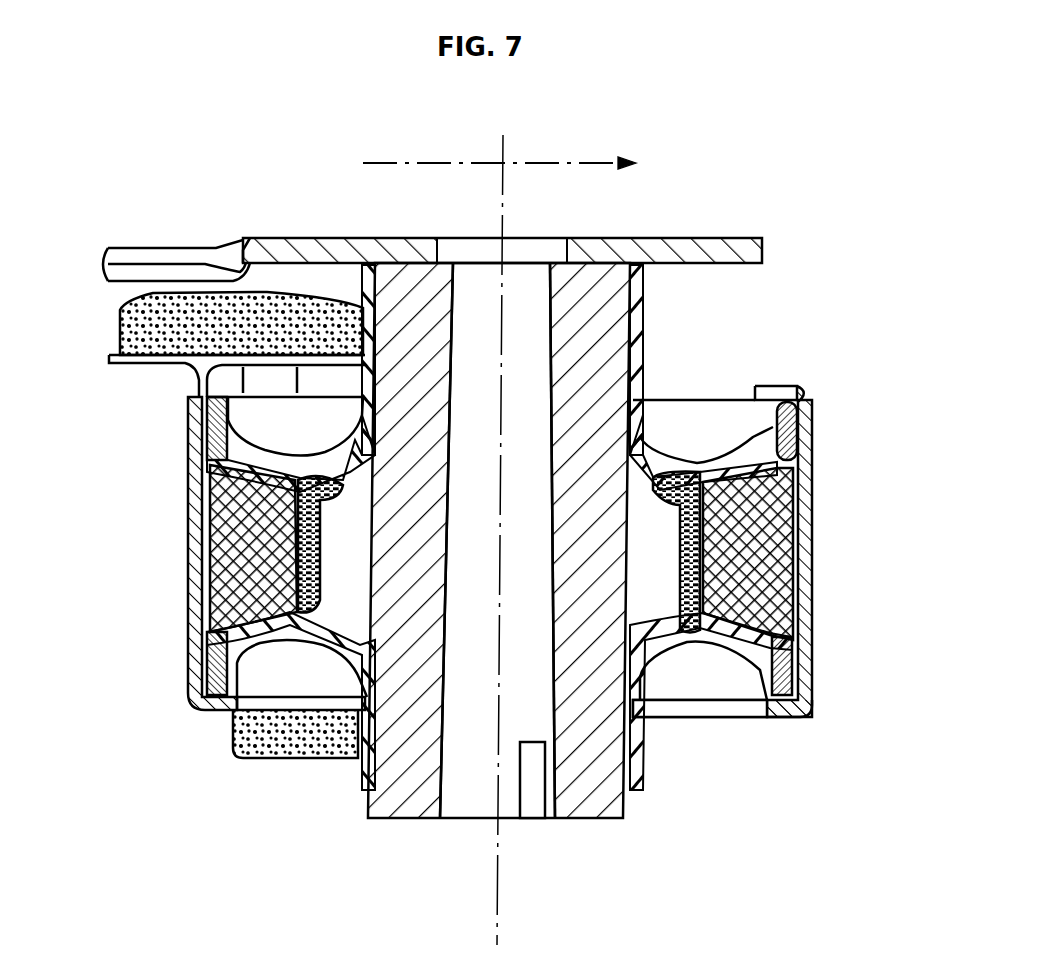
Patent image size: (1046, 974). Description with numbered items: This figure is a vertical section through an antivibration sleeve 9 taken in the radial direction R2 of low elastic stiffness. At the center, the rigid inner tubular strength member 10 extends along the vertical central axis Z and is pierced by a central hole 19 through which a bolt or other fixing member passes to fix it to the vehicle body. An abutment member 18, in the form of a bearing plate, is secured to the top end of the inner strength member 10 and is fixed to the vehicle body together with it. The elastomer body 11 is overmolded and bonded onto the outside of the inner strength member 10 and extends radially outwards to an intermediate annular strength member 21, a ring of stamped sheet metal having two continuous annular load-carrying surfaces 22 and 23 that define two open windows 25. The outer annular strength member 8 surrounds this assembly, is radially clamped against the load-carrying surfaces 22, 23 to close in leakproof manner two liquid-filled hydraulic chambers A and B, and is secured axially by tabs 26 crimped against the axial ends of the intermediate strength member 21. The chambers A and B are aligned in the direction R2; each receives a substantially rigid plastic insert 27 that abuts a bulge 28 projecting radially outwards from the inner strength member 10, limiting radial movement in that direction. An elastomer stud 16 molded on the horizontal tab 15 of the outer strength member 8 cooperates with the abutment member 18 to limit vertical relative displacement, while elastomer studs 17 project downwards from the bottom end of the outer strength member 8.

The outer annular strength member 8 is at (815, 590).
The antivibration sleeve 9 is at (660, 108).
The inner tubular strength member 10 is at (596, 800).
The elastomer body 11 is at (643, 437).
The horizontal tab 15 is at (120, 364).
The elastomer stud 16 is at (137, 327).
The elastomer stud 17 is at (320, 747).
The abutment member 18 is at (742, 243).
The central hole 19 is at (462, 800).
The intermediate annular strength member 21 is at (760, 428).
The annular load-carrying surface 22 is at (187, 424).
The annular load-carrying surface 23 is at (200, 705).
The open window 25 is at (190, 655).
The tab 26 is at (793, 387).
The insert 27 is at (195, 540).
The bulge 28 is at (305, 615).
The hydraulic chamber A is at (330, 622).
The hydraulic chamber B is at (652, 615).
The radial direction R2 is at (577, 162).
The vertical central axis Z is at (503, 924).